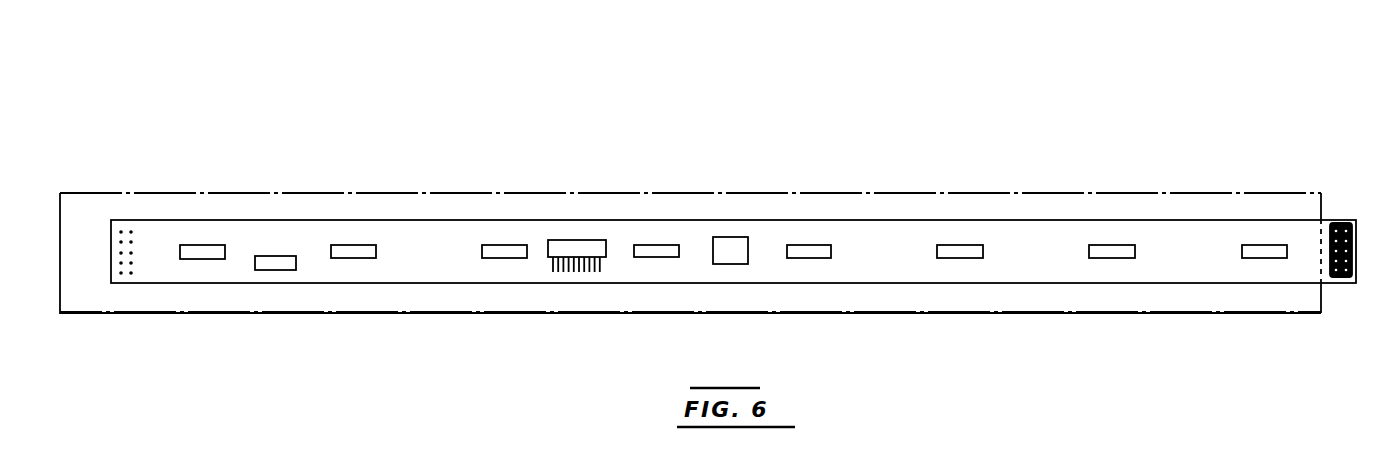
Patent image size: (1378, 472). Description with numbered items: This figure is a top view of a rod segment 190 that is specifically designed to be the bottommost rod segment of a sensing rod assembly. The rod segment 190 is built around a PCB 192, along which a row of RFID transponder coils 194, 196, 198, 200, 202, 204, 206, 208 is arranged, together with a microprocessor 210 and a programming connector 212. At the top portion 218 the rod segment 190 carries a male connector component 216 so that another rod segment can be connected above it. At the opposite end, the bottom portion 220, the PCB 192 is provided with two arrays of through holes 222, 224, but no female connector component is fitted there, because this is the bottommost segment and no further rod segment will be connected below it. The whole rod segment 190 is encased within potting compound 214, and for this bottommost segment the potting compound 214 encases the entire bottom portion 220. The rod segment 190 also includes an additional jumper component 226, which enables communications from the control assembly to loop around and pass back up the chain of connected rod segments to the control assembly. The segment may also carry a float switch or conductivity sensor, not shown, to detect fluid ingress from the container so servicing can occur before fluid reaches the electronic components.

The rod segment 190 is at (733, 222).
The PCB 192 is at (442, 245).
The RFID transponder coil 194 is at (205, 246).
The RFID transponder coil 196 is at (340, 246).
The RFID transponder coil 198 is at (515, 246).
The RFID transponder coil 200 is at (664, 246).
The RFID transponder coil 202 is at (813, 246).
The RFID transponder coil 204 is at (972, 246).
The RFID transponder coil 206 is at (1110, 246).
The RFID transponder coil 208 is at (1270, 246).
The microprocessor 210 is at (727, 246).
The programming connector 212 is at (593, 241).
The potting compound 214 is at (133, 193).
The male connector component 216 is at (1337, 222).
The top portion 218 is at (1309, 173).
The bottom portion 220 is at (85, 168).
The array of through holes 222 is at (118, 292).
The array of through holes 224 is at (131, 292).
The jumper component 226 is at (273, 270).